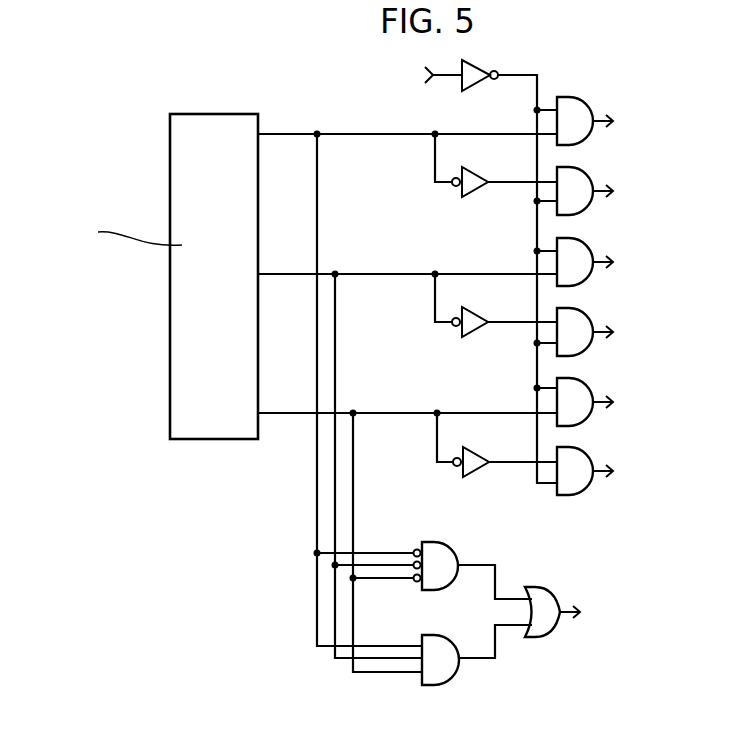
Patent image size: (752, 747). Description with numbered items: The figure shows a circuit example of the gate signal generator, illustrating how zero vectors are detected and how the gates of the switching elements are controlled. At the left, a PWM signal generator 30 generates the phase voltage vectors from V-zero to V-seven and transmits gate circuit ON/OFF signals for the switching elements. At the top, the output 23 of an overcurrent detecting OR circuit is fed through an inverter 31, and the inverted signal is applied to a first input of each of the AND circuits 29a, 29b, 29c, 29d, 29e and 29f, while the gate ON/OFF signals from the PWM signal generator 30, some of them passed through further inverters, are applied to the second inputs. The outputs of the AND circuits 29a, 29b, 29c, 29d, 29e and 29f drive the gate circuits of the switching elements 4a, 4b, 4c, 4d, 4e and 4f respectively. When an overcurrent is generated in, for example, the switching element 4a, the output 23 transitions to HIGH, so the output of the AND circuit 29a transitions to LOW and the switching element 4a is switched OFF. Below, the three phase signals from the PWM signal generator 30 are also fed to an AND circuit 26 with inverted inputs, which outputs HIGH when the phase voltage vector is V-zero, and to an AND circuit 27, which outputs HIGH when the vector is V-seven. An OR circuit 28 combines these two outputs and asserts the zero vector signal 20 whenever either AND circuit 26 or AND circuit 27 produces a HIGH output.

The PWM signal generator 30 is at (229, 257).
The output of the OR circuit 23 is at (431, 75).
The inverter 31 is at (481, 64).
The AND circuit 29a is at (577, 98).
The AND circuit 29b is at (588, 170).
The AND circuit 29c is at (588, 241).
The AND circuit 29d is at (588, 311).
The AND circuit 29e is at (588, 381).
The AND circuit 29f is at (588, 450).
The switching element 4a is at (615, 120).
The switching element 4b is at (615, 189).
The switching element 4c is at (615, 264).
The switching element 4d is at (615, 331).
The switching element 4e is at (615, 401).
The switching element 4f is at (616, 472).
The AND circuit 26 is at (446, 545).
The AND circuit 27 is at (446, 636).
The OR circuit 28 is at (553, 591).
The zero vector signal 20 is at (583, 612).